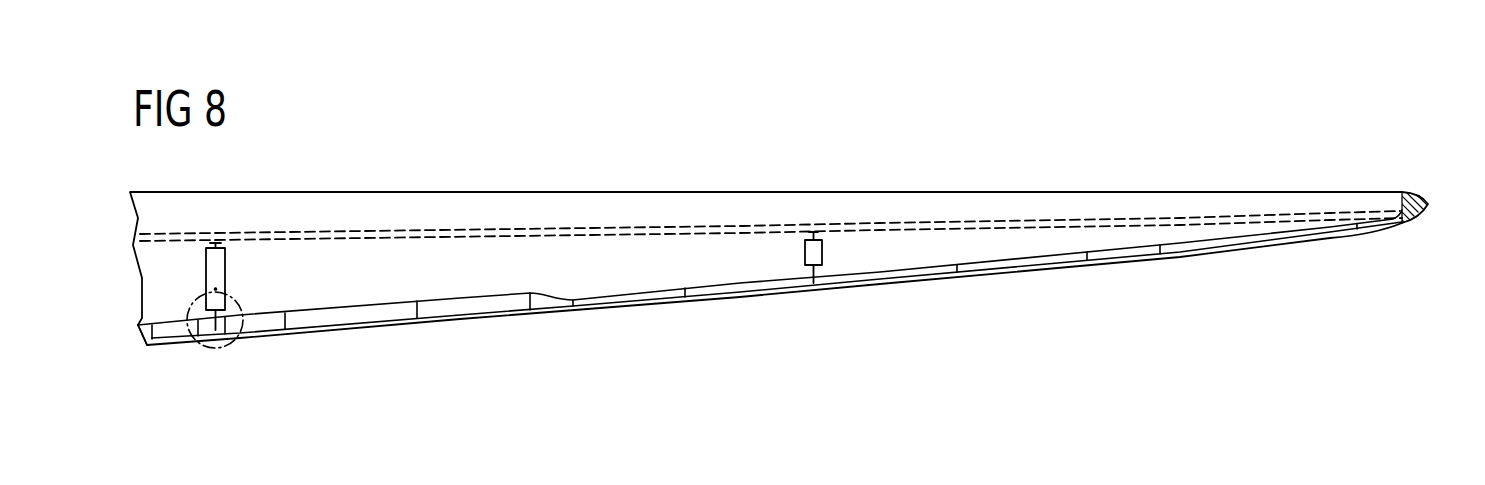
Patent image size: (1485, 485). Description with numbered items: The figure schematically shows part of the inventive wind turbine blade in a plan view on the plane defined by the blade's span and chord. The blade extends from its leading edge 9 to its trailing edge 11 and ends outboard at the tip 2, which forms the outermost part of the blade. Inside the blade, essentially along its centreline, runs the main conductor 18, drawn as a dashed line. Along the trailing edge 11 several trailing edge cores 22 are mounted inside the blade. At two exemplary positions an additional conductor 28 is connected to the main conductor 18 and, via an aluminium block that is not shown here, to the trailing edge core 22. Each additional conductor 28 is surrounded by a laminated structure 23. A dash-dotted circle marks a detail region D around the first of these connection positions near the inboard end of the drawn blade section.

The leading edge 9 is at (566, 192).
The tip 2 is at (1428, 204).
The main conductor 18 is at (364, 239).
The trailing edge 11 is at (595, 310).
The trailing edge cores 22 is at (357, 314).
The laminated structure 23 is at (206, 266).
The additional conductor 28 is at (228, 308).
The detail region D is at (207, 347).